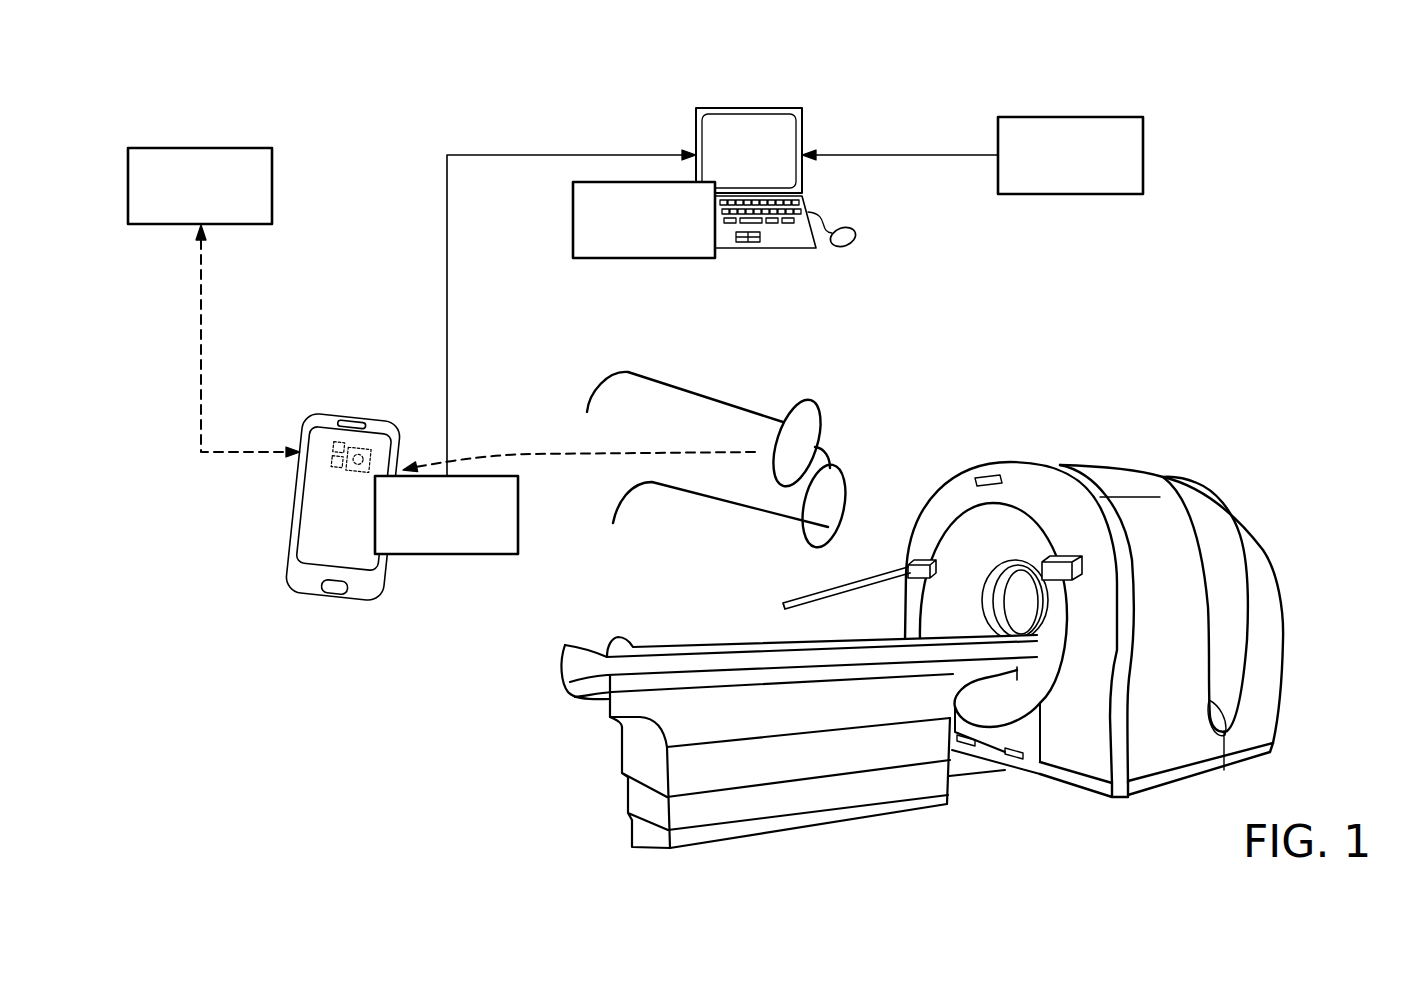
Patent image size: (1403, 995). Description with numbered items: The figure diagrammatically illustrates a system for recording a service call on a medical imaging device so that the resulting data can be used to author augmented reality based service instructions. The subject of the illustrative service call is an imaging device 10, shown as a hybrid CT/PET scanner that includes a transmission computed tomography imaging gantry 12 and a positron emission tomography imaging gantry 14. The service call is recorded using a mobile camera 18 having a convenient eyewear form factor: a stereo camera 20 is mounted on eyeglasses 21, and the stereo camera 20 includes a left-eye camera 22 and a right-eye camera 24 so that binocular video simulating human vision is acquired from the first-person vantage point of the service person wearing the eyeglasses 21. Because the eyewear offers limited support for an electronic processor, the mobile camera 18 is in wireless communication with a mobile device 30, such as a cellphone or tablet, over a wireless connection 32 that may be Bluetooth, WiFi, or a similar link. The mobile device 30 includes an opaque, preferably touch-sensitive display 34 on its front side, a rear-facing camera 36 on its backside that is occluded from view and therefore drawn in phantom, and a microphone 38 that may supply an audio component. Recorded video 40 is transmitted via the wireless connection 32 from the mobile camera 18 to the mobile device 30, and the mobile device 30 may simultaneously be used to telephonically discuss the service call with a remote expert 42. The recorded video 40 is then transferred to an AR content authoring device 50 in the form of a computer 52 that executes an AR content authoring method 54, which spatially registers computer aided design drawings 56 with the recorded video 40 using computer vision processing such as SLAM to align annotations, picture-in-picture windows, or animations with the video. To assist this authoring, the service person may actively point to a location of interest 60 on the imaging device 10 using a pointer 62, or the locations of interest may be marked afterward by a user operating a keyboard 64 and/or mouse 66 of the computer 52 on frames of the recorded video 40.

The imaging device 10 is at (922, 622).
The transmission computed tomography (CT) imaging gantry 12 is at (1097, 460).
The positron emission tomography (PET) imaging gantry 14 is at (1228, 510).
The mobile camera 18 is at (752, 463).
The stereo camera 20 is at (815, 398).
The eyeglasses 21 is at (800, 530).
The left-eye camera 22 is at (813, 400).
The right-eye camera 24 is at (845, 466).
The mobile device 30 is at (306, 471).
The wireless connection 32 is at (487, 452).
The opaque display 34 is at (300, 497).
The rear-facing camera 36 is at (352, 462).
The microphone 38 is at (352, 420).
The recorded video 40 is at (447, 556).
The remote expert 42 is at (201, 147).
The AR content authoring device 50 is at (763, 167).
The computer 52 is at (748, 108).
The AR content authoring method 54 is at (642, 258).
The computer aided design (CAD) drawings 56 is at (1069, 117).
The location of interest (LOI) 60 is at (940, 566).
The pointer 62 is at (783, 606).
The keyboard 64 is at (792, 224).
The mouse 66 is at (857, 237).